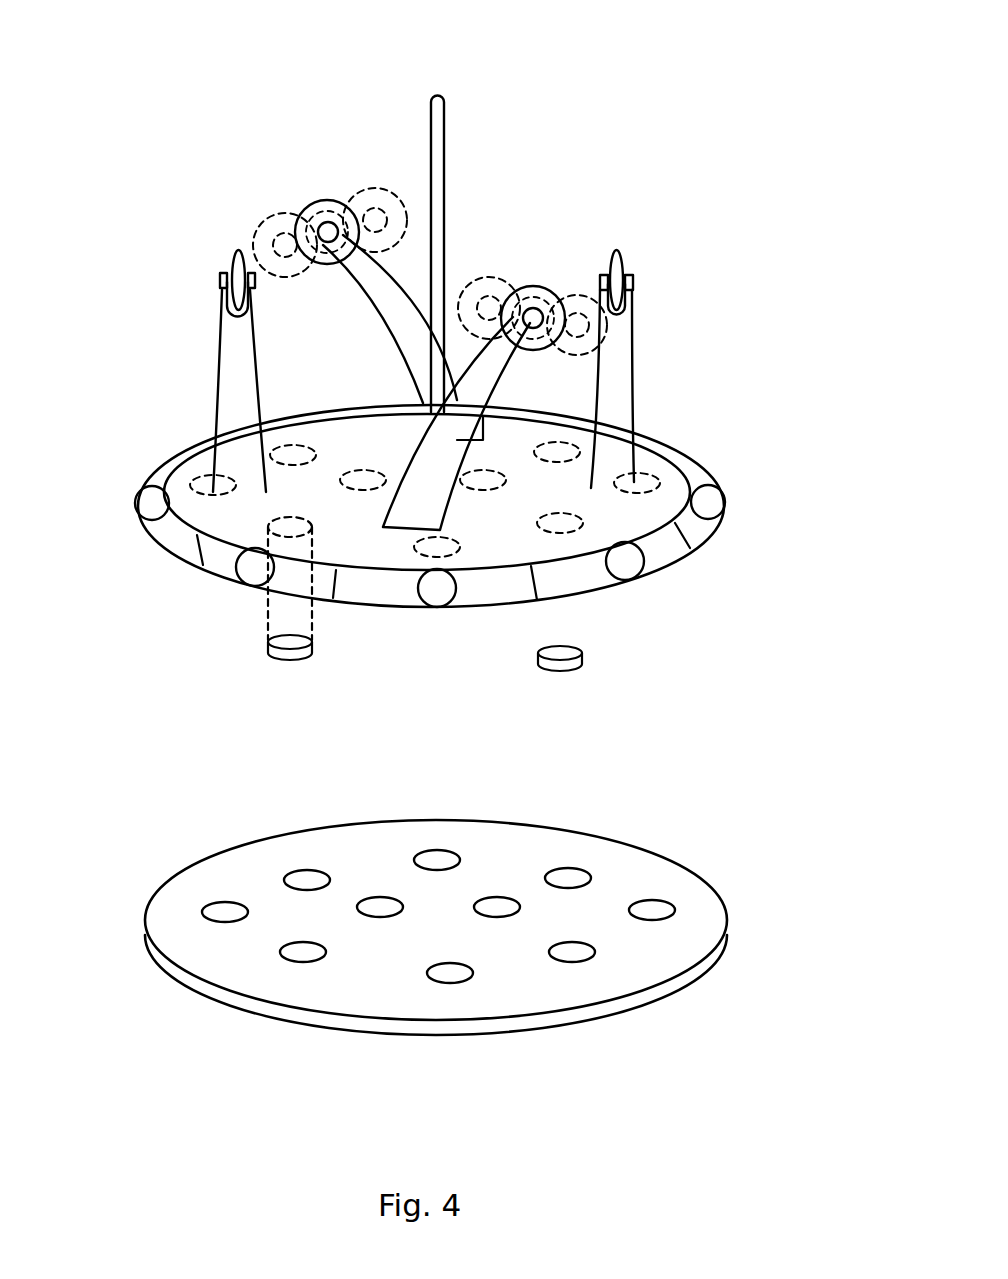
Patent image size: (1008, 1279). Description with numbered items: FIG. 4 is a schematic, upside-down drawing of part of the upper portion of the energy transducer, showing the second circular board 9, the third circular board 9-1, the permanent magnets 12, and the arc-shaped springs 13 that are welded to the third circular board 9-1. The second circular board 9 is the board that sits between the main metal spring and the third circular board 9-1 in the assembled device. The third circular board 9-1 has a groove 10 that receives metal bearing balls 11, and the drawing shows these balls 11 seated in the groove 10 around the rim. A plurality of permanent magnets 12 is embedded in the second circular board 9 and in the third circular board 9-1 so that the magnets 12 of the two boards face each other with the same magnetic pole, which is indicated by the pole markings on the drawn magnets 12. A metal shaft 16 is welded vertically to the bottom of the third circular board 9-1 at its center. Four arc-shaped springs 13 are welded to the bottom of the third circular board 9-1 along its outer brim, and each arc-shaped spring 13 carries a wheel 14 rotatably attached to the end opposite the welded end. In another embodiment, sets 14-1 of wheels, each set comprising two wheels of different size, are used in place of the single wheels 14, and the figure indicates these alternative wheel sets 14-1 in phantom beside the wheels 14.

The second circular board 9 is at (710, 957).
The third circular board 9-1 is at (218, 562).
The groove 10 is at (585, 575).
The metal bearing balls 11 is at (707, 503).
The permanent magnets 12 is at (297, 882).
The arc-shaped springs 13 is at (620, 383).
The wheels 14 is at (318, 207).
The sets of wheels 14-1 is at (362, 193).
The metal shaft 16 is at (438, 177).